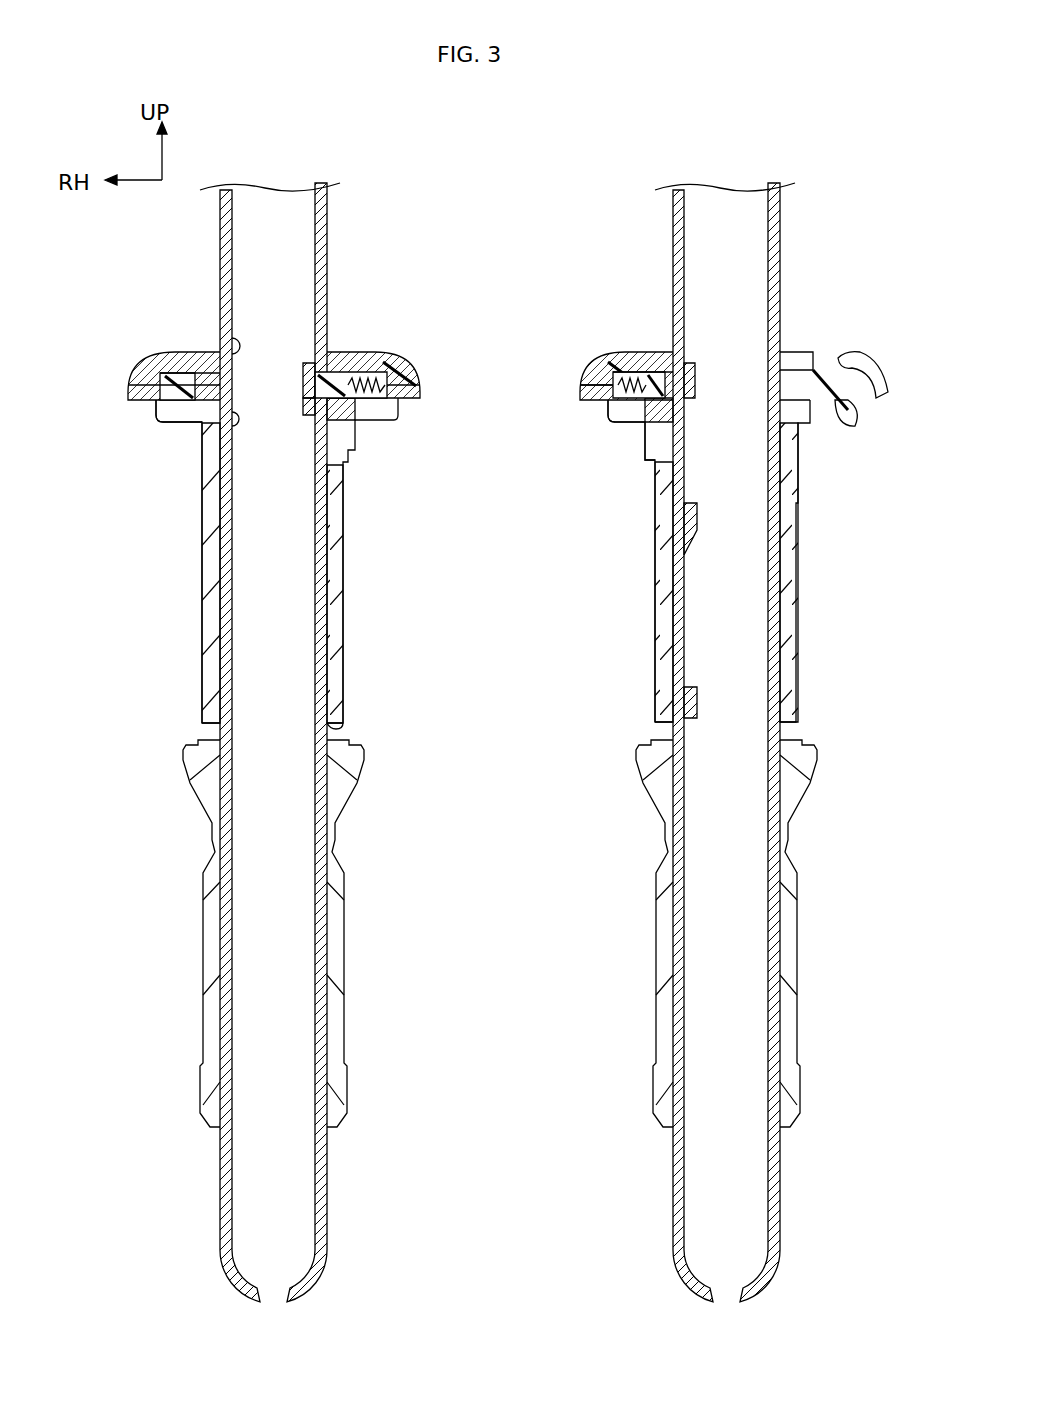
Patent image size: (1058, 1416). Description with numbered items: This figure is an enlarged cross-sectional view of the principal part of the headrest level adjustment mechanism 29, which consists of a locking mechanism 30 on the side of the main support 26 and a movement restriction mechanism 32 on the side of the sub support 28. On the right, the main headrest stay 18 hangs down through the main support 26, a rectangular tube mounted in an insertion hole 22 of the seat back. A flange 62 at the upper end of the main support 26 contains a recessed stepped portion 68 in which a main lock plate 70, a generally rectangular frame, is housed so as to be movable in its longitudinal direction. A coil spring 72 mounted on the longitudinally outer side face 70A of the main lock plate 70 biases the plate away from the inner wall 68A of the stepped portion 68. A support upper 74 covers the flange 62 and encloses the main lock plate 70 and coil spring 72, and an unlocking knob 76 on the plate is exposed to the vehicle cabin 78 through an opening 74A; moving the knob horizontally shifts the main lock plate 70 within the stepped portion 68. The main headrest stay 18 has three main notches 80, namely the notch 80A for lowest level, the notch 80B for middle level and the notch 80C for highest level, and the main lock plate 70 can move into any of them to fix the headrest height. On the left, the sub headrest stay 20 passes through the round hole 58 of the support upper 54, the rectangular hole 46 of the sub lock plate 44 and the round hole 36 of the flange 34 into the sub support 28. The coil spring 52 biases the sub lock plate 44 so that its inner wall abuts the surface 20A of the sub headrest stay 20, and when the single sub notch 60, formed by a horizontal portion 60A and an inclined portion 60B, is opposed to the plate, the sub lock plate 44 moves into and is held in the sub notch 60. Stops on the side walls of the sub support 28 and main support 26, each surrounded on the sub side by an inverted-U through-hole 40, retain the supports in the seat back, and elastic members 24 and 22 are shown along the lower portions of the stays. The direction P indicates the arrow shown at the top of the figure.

The main headrest stay 18 is at (780, 214).
The sub headrest stay 20 is at (327, 214).
The surface of the sub headrest stay 20A is at (330, 522).
The insertion hole 22 is at (786, 898).
The insertion hole 24 is at (205, 918).
The main support 26 is at (797, 601).
The sub support 28 is at (344, 613).
The level adjustment mechanism 29 is at (788, 122).
The locking mechanism 30 is at (809, 180).
The movement restriction mechanism 32 is at (360, 184).
The flange 34 is at (160, 387).
The round hole 36 is at (205, 430).
The through-hole 40 is at (345, 729).
The sub lock plate 44 is at (345, 370).
The rectangular hole 46 is at (190, 402).
The coil spring 52 is at (370, 372).
The support upper 54 is at (175, 358).
The round hole 58 is at (230, 348).
The sub notch 60 is at (207, 442).
The horizontal portion 60A is at (320, 398).
The inclined portion 60B is at (345, 402).
The flange 62 is at (630, 402).
The stepped portion 68 is at (650, 404).
The inner wall of the stepped portion 68A is at (606, 405).
The main lock plate 70 is at (648, 372).
The side face of the main lock plate 70A is at (604, 372).
The coil spring 72 is at (598, 384).
The support upper 74 is at (625, 358).
The opening 74A is at (797, 370).
The unlocking knob 76 is at (862, 355).
The vehicle cabin 78 is at (922, 476).
The main notches 80 is at (600, 547).
The notch for lowest level 80A is at (689, 402).
The notch for middle level 80B is at (690, 520).
The notch for highest level 80C is at (688, 705).
The insertion direction P is at (883, 153).